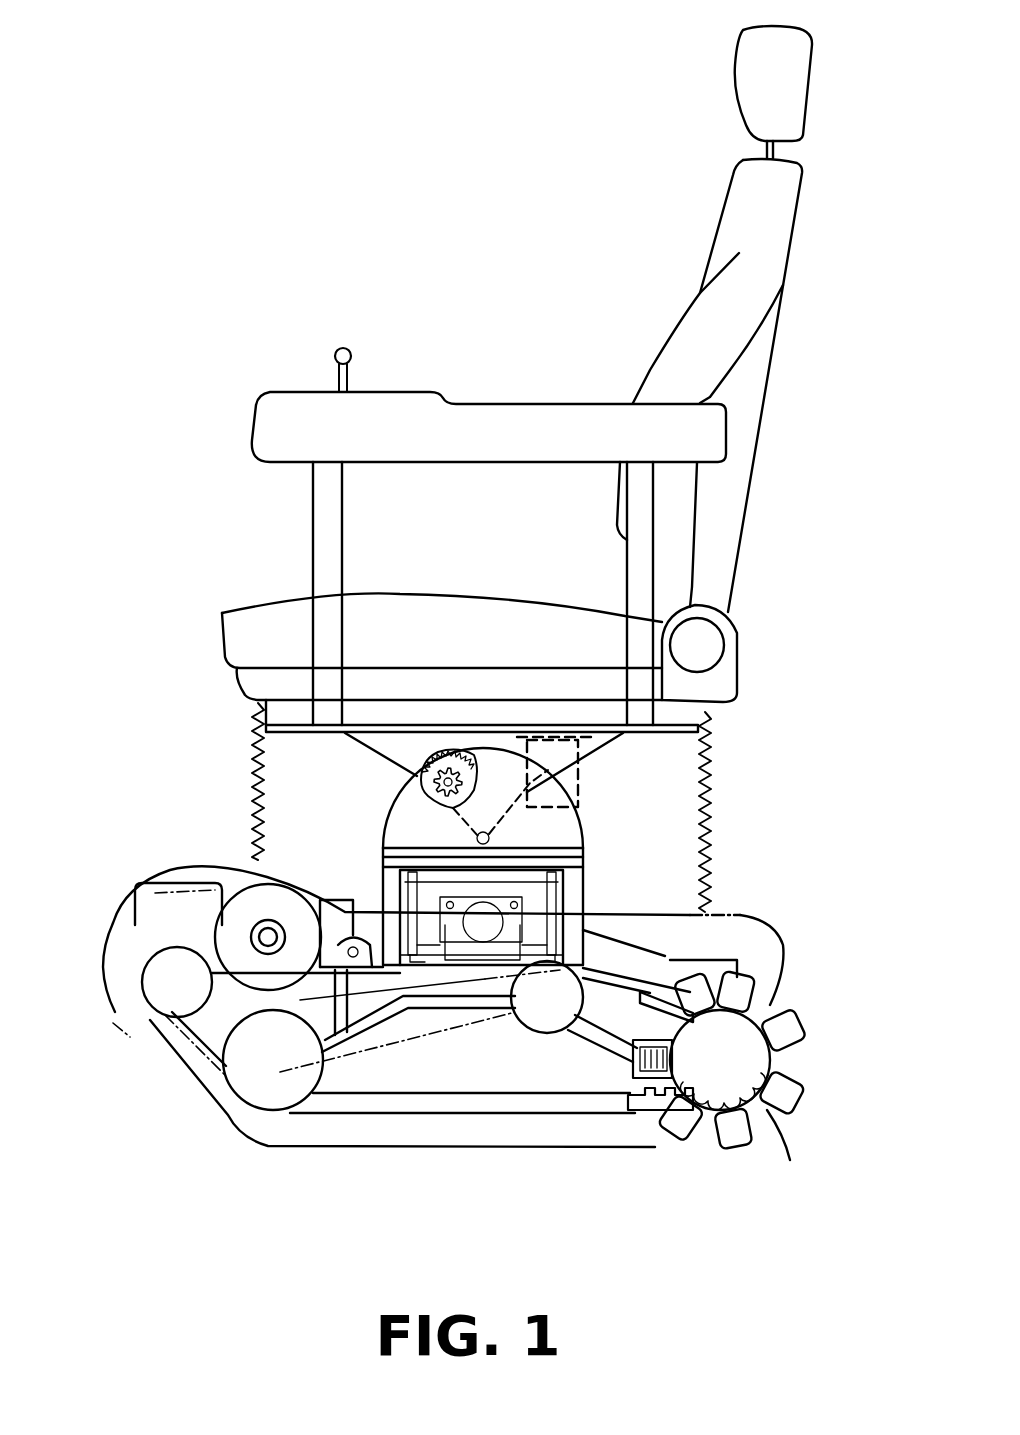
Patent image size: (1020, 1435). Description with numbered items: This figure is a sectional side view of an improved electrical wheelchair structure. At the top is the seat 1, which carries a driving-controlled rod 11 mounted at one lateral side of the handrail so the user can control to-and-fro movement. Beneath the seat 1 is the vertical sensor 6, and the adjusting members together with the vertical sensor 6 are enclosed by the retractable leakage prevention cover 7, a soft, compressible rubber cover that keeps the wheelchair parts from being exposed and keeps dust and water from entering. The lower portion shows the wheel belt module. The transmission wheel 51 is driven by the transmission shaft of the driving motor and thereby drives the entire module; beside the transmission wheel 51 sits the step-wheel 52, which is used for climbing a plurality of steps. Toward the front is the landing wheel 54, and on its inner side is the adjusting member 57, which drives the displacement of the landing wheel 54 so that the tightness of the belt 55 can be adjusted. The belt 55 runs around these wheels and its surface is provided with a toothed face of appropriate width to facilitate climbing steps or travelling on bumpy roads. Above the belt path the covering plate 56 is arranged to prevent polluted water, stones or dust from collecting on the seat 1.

The seat 1 is at (522, 277).
The vertical sensor 6 is at (575, 768).
The retractable leakage prevention cover 7 is at (255, 772).
The driving-controlled rod 11 is at (337, 350).
The transmission wheel 51 is at (163, 1000).
The step-wheel 52 is at (252, 1087).
The landing wheel 54 is at (760, 1068).
The belt 55 is at (665, 1112).
The covering plate 56 is at (730, 1060).
The adjusting member 57 is at (630, 1080).